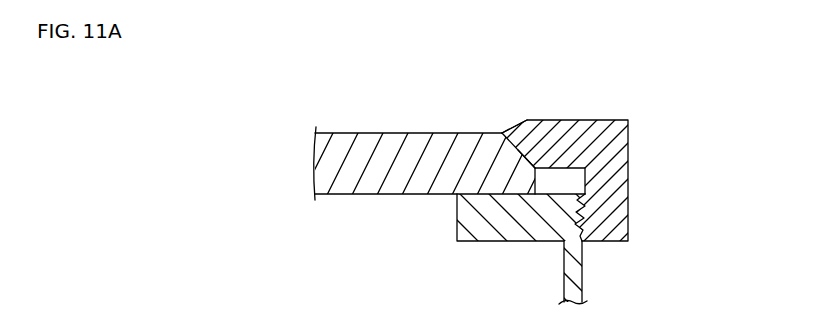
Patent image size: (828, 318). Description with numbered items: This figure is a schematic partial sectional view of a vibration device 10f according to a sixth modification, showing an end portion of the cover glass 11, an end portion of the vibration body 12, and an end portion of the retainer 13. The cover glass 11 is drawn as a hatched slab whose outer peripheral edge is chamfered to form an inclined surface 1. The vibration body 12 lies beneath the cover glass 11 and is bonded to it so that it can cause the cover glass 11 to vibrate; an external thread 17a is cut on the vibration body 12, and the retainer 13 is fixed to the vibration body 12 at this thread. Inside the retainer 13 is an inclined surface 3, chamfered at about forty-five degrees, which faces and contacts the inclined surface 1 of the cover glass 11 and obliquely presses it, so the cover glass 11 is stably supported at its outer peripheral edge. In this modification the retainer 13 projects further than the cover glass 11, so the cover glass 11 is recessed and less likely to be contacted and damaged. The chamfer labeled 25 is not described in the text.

The vibration device 10f is at (631, 83).
The cover glass 11 is at (402, 140).
The vibration body 12 is at (490, 230).
The retainer 13 is at (617, 180).
The inclined surface 1 is at (540, 158).
The inclined surface 3 is at (522, 157).
The inclined surface (chamfer) 25 is at (509, 123).
The external thread 17a is at (594, 224).